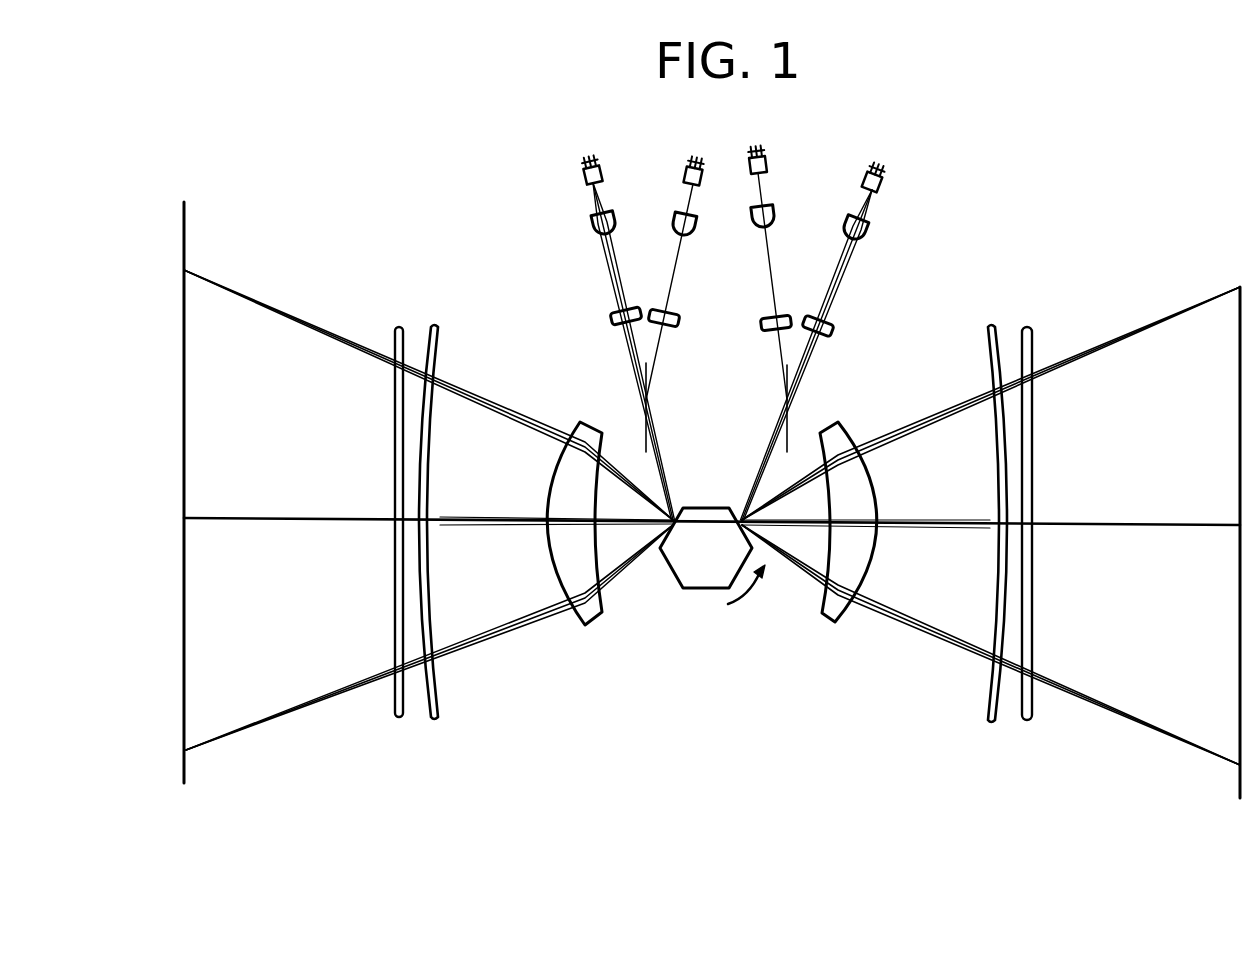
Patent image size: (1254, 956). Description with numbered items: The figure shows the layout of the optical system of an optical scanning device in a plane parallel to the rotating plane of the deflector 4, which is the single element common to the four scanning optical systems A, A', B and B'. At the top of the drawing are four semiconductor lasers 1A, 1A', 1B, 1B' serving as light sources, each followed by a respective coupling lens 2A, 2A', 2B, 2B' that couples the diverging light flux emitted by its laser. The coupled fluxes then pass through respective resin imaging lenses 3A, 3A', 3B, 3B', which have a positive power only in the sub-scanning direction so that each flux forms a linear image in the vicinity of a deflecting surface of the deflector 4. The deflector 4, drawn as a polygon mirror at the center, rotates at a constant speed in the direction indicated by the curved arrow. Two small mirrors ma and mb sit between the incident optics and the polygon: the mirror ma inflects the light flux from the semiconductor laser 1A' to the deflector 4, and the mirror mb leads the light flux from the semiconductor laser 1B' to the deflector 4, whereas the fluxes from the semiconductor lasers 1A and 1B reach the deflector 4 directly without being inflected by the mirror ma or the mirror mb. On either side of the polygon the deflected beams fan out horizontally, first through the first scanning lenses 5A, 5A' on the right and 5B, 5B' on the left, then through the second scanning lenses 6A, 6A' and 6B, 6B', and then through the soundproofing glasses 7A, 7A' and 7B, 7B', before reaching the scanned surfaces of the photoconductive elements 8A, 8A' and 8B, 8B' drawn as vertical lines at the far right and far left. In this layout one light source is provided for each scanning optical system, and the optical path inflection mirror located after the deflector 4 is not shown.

The semiconductor laser 1A is at (913, 187).
The semiconductor laser 1A' is at (800, 152).
The semiconductor laser 1B is at (565, 188).
The semiconductor laser 1B' is at (661, 187).
The coupling lens 2A is at (887, 244).
The coupling lens 2A' is at (798, 235).
The coupling lens 2B is at (573, 242).
The coupling lens 2B' is at (716, 245).
The resin imaging lens 3A is at (855, 323).
The resin imaging lens 3A' is at (743, 306).
The resin imaging lens 3B is at (602, 340).
The resin imaging lens 3B' is at (694, 341).
The deflector 4 is at (711, 580).
The first scanning lens 5A is at (824, 574).
The first scanning lens 5A' is at (824, 574).
The first scanning lens 5B is at (573, 581).
The first scanning lens 5B' is at (573, 581).
The second scanning lens 6A is at (1018, 577).
The second scanning lens 6A' is at (1018, 577).
The second scanning lens 6B is at (474, 528).
The second scanning lens 6B' is at (474, 528).
The soundproofing glass 7A is at (1068, 562).
The soundproofing glass 7A' is at (1068, 562).
The soundproofing glass 7B is at (432, 566).
The soundproofing glass 7B' is at (432, 566).
The photoconductive element 8A is at (1201, 574).
The photoconductive element 8A' is at (1201, 574).
The photoconductive element 8B is at (237, 525).
The photoconductive element 8B' is at (237, 525).
The mirror ma is at (792, 447).
The mirror mb is at (645, 447).